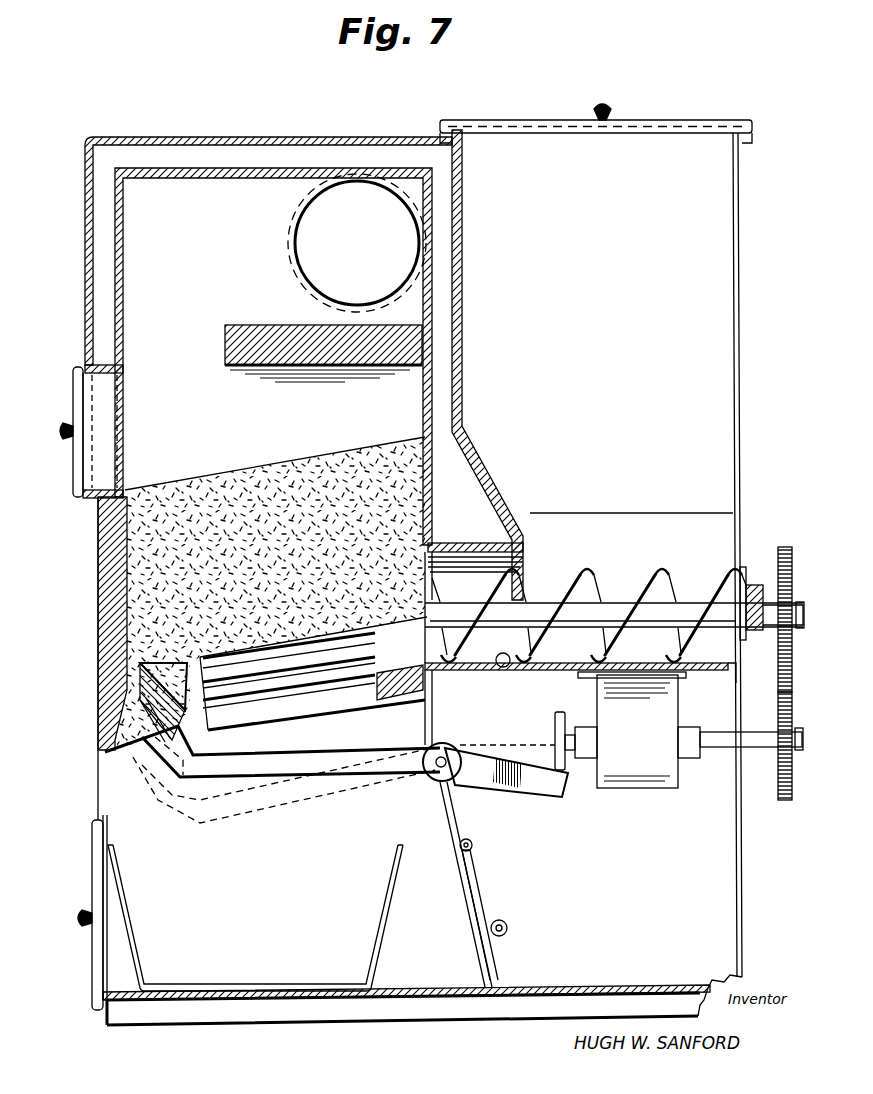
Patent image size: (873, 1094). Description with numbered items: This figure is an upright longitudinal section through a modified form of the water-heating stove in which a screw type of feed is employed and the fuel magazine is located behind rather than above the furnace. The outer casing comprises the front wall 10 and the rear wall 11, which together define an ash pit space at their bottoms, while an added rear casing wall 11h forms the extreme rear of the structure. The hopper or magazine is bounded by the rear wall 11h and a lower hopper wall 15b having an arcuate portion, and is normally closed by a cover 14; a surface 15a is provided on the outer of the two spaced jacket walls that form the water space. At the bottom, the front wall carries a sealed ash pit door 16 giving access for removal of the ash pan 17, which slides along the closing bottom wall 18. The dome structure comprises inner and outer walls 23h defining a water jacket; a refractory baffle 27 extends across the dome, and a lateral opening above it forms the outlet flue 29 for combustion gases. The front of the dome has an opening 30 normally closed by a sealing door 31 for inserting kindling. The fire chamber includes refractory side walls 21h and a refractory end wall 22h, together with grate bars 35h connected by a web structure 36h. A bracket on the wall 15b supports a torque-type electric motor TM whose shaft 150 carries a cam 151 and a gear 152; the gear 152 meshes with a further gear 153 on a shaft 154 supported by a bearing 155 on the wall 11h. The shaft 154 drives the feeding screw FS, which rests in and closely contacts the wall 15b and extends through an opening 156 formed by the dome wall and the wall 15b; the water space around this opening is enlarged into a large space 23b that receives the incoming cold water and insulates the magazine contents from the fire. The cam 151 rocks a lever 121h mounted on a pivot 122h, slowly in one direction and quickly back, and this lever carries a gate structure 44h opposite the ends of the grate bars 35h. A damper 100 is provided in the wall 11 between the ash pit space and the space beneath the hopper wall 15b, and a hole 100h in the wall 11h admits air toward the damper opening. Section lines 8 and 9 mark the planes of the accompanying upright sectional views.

The section line 8— 8 is at (278, 1058).
The section line 9— 9 is at (550, 1062).
The front wall 10 is at (97, 789).
The rear wall 11 is at (449, 812).
The rear casing wall 11h is at (739, 358).
The cover 14 is at (746, 128).
The jacket surface 15a is at (503, 503).
The lower hopper wall 15b is at (492, 668).
The ash pit door 16 is at (92, 877).
The ash pan 17 is at (272, 858).
The bottom wall 18 is at (427, 974).
The refractory side walls 21h is at (310, 463).
The refractory end wall 22h is at (100, 557).
The dome walls 23h is at (95, 258).
The enlarged water space 23b is at (458, 470).
The refractory baffle 27 is at (236, 325).
The outlet flue 29 is at (301, 199).
The opening 30 is at (110, 379).
The sealing door 31 is at (75, 386).
The grate bars 35h is at (298, 683).
The web structure 36h is at (407, 654).
The gate structure 44h is at (125, 716).
The damper 100 is at (512, 888).
The hole 100h is at (743, 951).
The lever 121h is at (518, 793).
The pivot 122h is at (447, 758).
The motor shaft 150 is at (722, 748).
The cam 151 is at (573, 704).
The gear 152 is at (788, 801).
The further gear 153 is at (780, 663).
The screw shaft 154 is at (804, 598).
The bearing 155 is at (749, 597).
The opening 156 is at (532, 543).
The feeding screw FS is at (583, 583).
The torque motor TM is at (637, 731).